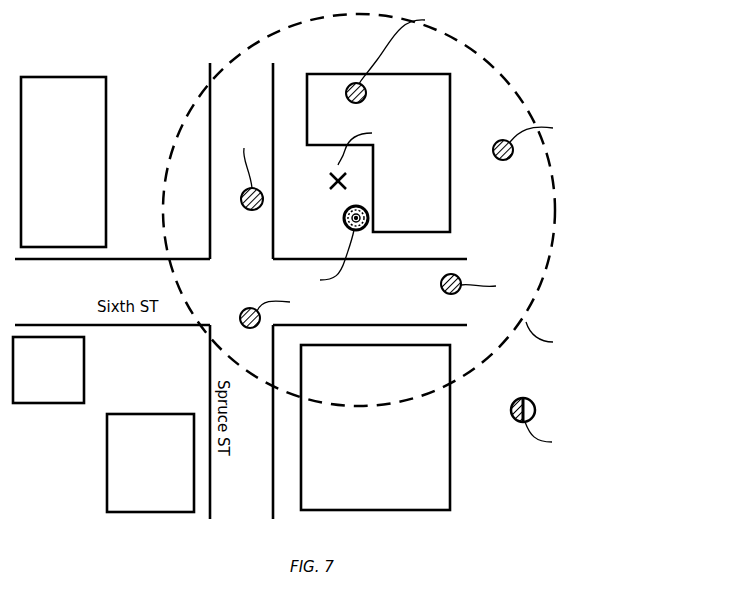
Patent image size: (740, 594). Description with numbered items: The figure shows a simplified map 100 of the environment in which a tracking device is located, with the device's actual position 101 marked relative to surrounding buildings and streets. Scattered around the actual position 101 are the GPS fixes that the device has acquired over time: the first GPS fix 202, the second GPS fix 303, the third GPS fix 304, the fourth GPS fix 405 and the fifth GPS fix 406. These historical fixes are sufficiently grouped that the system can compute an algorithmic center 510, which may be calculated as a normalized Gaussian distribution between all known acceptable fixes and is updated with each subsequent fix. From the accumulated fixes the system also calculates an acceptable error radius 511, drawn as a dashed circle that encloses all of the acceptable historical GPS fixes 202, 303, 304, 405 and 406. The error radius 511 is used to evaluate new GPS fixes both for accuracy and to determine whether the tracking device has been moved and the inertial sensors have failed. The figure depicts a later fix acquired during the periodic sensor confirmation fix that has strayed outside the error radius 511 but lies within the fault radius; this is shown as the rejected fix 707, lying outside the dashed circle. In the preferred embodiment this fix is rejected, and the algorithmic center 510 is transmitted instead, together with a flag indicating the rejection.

The simplified map 100 is at (588, 211).
The actual position 101 is at (349, 181).
The first GPS fix 202 is at (245, 328).
The second GPS fix 303 is at (441, 283).
The third GPS fix 304 is at (241, 200).
The fourth GPS fix 405 is at (510, 157).
The fifth GPS fix 406 is at (366, 95).
The algorithmic center 510 is at (345, 224).
The error radius 511 is at (551, 262).
The rejected fix 707 is at (518, 422).